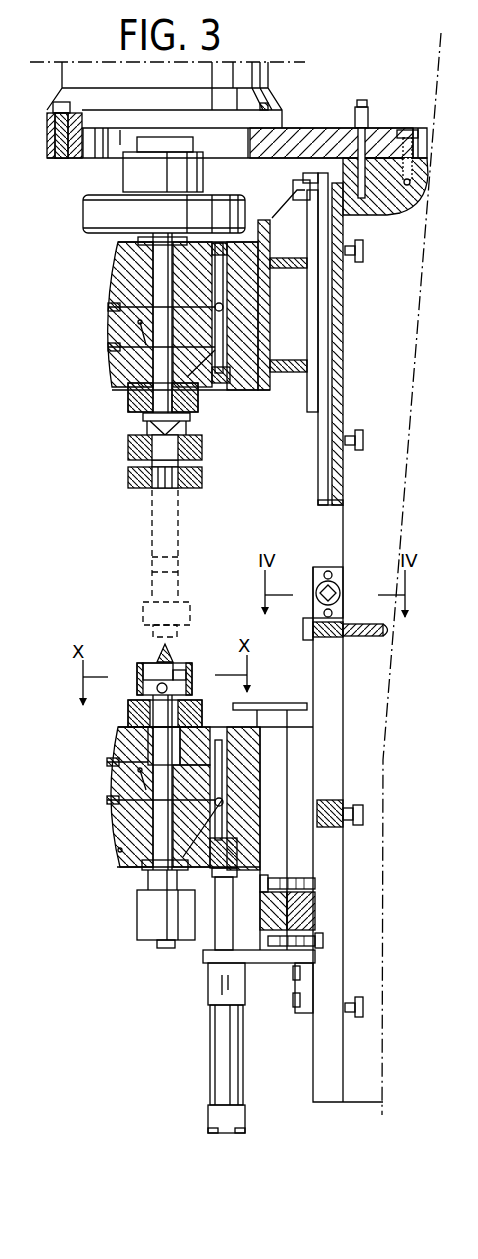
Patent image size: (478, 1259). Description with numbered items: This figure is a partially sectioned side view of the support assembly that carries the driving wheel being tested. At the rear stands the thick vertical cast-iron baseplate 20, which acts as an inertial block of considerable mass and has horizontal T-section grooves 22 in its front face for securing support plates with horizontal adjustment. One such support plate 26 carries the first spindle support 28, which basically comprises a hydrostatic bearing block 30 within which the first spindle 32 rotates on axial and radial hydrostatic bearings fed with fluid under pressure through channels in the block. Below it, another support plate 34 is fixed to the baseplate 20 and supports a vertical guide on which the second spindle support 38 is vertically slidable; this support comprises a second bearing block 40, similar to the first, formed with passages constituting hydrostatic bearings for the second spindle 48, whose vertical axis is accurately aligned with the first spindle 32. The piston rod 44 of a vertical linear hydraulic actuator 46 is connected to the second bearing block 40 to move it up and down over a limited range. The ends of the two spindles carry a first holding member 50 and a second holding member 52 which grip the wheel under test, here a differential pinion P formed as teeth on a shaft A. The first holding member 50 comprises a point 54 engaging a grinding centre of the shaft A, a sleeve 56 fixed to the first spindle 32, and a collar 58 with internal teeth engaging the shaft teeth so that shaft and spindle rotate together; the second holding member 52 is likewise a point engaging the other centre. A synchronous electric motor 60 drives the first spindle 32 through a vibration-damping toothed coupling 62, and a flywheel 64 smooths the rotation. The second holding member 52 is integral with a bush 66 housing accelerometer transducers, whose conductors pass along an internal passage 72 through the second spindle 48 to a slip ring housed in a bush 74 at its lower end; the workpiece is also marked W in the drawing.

The baseplate 20 is at (407, 474).
The T-section grooves 22 is at (356, 428).
The support plate 26 is at (338, 307).
The first spindle support 28 is at (161, 318).
The hydrostatic bearing block 30 is at (127, 272).
The first spindle 32 is at (162, 364).
The support plate 34 is at (320, 660).
The second spindle support 38 is at (185, 821).
The second bearing block 40 is at (110, 780).
The piston rod 44 is at (223, 933).
The first linear hydraulic actuator 46 is at (222, 1072).
The second spindle 48 is at (170, 807).
The first holding member 50 is at (165, 452).
The second holding member 52 is at (170, 656).
The point 54 is at (140, 421).
The sleeve 56 is at (130, 448).
The collar 58 is at (130, 480).
The synchronous electric motor 60 is at (262, 76).
The coupling 62 is at (133, 180).
The flywheel 64 is at (107, 213).
The bush 66 is at (143, 663).
The internal passage 72 is at (130, 723).
The bush 74 is at (148, 915).
The workpiece W is at (203, 480).
The shaft A is at (140, 525).
The pinion P is at (138, 608).